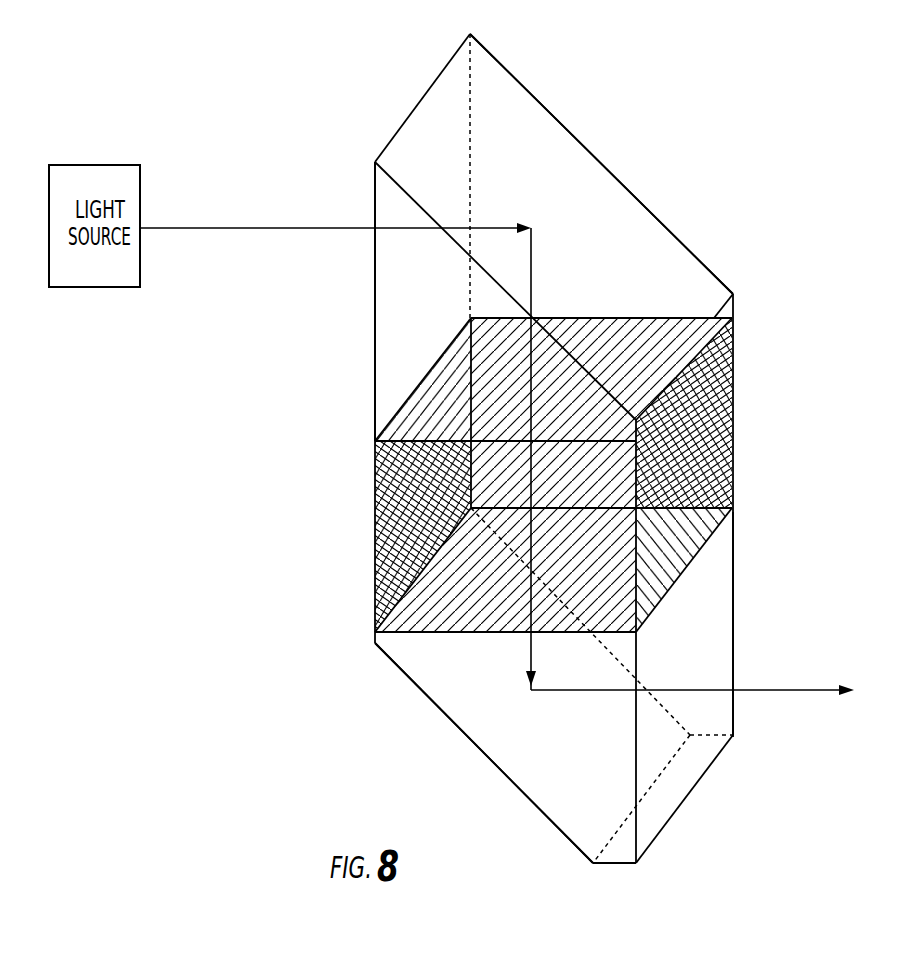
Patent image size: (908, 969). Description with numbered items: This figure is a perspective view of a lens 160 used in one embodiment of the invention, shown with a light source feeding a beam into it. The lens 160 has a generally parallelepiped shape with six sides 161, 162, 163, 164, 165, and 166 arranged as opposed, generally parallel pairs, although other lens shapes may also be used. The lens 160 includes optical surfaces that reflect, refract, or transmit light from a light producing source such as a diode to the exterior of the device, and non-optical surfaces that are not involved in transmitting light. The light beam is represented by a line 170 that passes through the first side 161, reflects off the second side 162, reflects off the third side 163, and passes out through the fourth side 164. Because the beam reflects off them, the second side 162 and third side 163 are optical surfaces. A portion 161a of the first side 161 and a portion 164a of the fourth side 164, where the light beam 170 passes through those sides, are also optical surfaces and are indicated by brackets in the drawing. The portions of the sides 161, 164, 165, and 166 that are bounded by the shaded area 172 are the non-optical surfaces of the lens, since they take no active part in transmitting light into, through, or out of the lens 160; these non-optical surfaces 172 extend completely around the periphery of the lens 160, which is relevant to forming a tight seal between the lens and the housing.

The lens 160 is at (503, 448).
The first side 161 is at (390, 310).
The portion of the first side 161a is at (363, 165).
The second side 162 is at (538, 147).
The third side 163 is at (470, 735).
The fourth side 164 is at (725, 578).
The portion of the fourth side 164a is at (738, 512).
The fifth side 165 is at (575, 757).
The sixth side 166 is at (626, 271).
The light beam 170 is at (198, 227).
The shaded area 172 is at (397, 567).